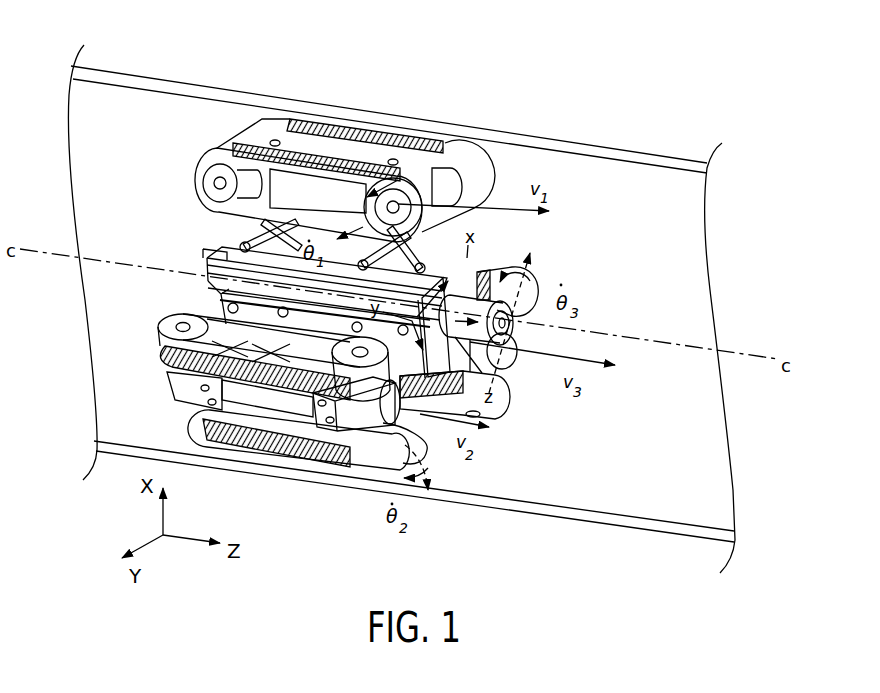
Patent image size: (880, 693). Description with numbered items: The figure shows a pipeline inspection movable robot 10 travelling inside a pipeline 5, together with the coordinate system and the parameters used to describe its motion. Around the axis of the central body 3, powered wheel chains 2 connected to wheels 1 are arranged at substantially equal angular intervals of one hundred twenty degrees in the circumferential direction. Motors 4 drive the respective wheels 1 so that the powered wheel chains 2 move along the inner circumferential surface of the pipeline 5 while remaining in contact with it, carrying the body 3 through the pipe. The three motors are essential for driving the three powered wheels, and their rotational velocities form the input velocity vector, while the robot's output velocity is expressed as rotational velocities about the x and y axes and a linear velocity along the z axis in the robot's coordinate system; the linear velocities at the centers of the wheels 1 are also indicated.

The pipeline inspection movable robot 10 is at (649, 67).
The pipeline 5 is at (695, 165).
The powered wheel chain 2 is at (300, 124).
The wheel 1 is at (400, 204).
The motor 4 is at (450, 170).
The body 3 is at (205, 277).